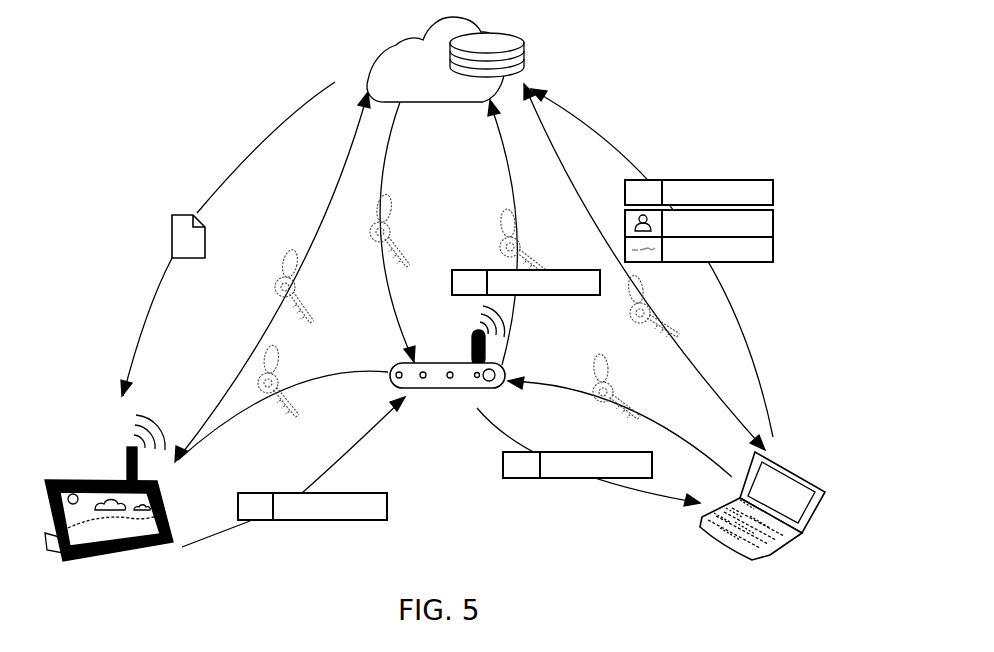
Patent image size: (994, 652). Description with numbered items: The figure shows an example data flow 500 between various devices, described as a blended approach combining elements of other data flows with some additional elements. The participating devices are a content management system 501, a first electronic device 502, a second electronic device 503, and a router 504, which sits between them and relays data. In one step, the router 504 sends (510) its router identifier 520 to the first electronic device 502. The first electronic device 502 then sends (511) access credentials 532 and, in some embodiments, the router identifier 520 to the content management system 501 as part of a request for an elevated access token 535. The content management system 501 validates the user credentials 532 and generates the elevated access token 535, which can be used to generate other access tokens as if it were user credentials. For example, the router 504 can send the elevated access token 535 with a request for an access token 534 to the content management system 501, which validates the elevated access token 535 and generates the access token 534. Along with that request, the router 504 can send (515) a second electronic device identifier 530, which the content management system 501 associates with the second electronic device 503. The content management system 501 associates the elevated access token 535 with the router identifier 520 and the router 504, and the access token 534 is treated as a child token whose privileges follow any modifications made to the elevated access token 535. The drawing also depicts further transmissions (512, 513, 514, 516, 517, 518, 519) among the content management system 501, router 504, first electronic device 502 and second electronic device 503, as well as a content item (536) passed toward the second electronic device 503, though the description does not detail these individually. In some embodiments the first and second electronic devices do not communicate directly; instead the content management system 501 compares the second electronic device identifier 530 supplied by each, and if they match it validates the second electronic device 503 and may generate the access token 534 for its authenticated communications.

The data flow 500 is at (782, 122).
The content management system 501 is at (522, 63).
The first electronic device 502 is at (813, 477).
The second electronic device 503 is at (63, 477).
The router 504 is at (423, 390).
The sending of router identifier 510 is at (660, 500).
The sending of access credentials 511 is at (757, 360).
The transmission of router identifier to server 512 is at (573, 197).
The transmission of key from user device to router 513 is at (690, 447).
The transmission of device identifier to router 514 is at (182, 547).
The sending of second electronic device identifier 515 is at (493, 117).
The transmission of key from server to router 516 is at (398, 110).
The transmission of key from router to device 517 is at (210, 440).
The transmission of key from server to device 518 is at (320, 237).
The transmission of content file to device 519 is at (132, 360).
The router identifier 520 is at (773, 193).
The second electronic device identifier 530 is at (527, 295).
The access credentials 532 is at (773, 260).
The access token 534 is at (400, 237).
The elevated access token 535 is at (520, 235).
The content file 536 is at (182, 240).